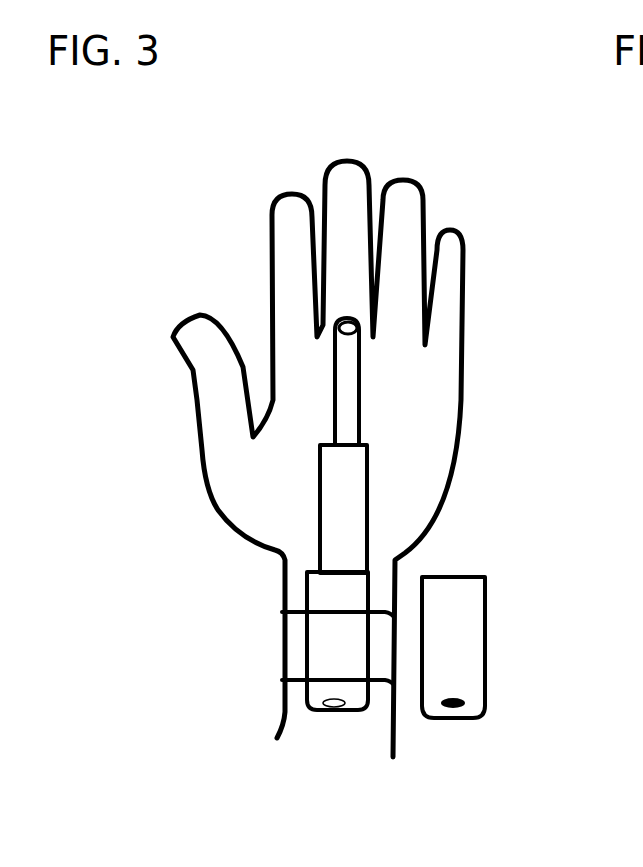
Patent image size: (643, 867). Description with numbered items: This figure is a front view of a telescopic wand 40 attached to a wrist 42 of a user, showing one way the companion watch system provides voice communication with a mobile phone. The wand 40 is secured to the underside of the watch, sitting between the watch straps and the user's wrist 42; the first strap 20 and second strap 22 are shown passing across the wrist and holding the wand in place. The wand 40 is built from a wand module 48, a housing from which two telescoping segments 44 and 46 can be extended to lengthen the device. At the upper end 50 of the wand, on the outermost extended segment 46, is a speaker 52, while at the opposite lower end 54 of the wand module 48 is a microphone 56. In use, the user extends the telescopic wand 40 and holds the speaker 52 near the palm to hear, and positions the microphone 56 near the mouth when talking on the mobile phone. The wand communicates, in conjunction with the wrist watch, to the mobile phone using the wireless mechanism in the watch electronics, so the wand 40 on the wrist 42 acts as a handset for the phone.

The first strap 20 is at (293, 635).
The second strap 22 is at (383, 633).
The telescopic wand 40 is at (180, 527).
The wrist 42 is at (282, 700).
The segment 44 is at (350, 538).
The segment 46 is at (350, 407).
The wand module 48 is at (318, 650).
The upper end 50 is at (392, 340).
The speaker 52 is at (340, 327).
The lower end 54 is at (390, 724).
The microphone 56 is at (335, 710).